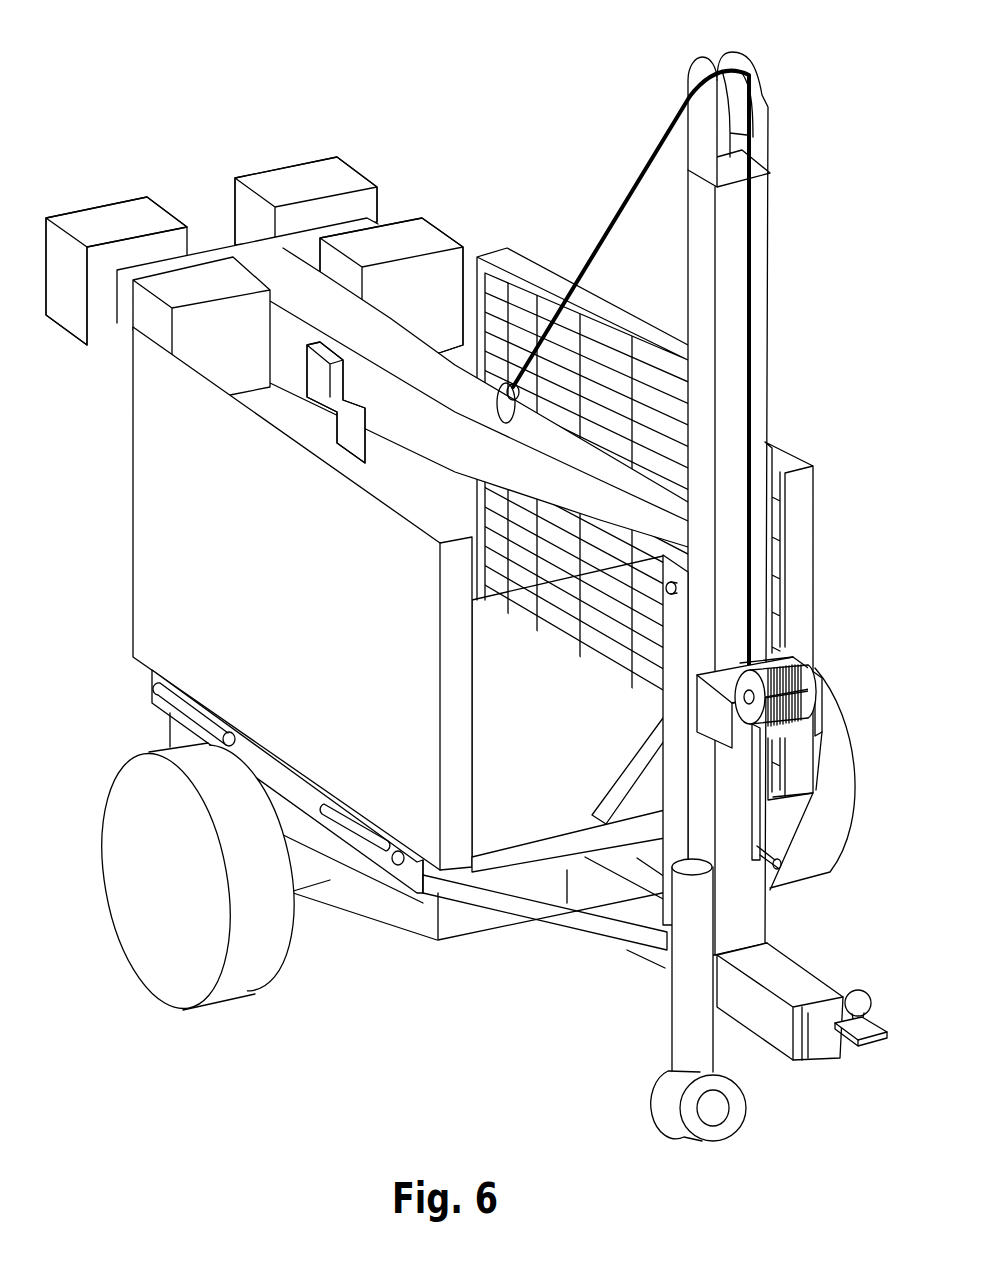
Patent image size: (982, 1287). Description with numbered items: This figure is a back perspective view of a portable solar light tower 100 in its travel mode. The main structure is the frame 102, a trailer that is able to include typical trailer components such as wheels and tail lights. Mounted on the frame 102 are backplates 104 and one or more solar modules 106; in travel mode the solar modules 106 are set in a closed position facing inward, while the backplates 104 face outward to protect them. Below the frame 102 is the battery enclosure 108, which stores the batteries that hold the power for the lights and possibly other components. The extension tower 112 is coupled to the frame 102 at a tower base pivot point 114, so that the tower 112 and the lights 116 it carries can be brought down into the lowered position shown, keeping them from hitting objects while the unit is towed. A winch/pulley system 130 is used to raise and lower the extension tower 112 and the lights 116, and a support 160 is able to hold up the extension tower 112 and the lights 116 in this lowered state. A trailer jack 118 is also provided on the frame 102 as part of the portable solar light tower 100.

The portable solar light tower 100 is at (59, 88).
The frame 102 is at (506, 747).
The backplates 104 is at (163, 510).
The solar modules 106 is at (612, 397).
The battery enclosure 108 is at (405, 900).
The tower 112 is at (391, 418).
The tower base pivot point 114 is at (679, 553).
The lights 116 is at (284, 181).
The trailer jack 118 is at (604, 1020).
The winch/pulley system 130 is at (795, 93).
The support 160 is at (353, 434).